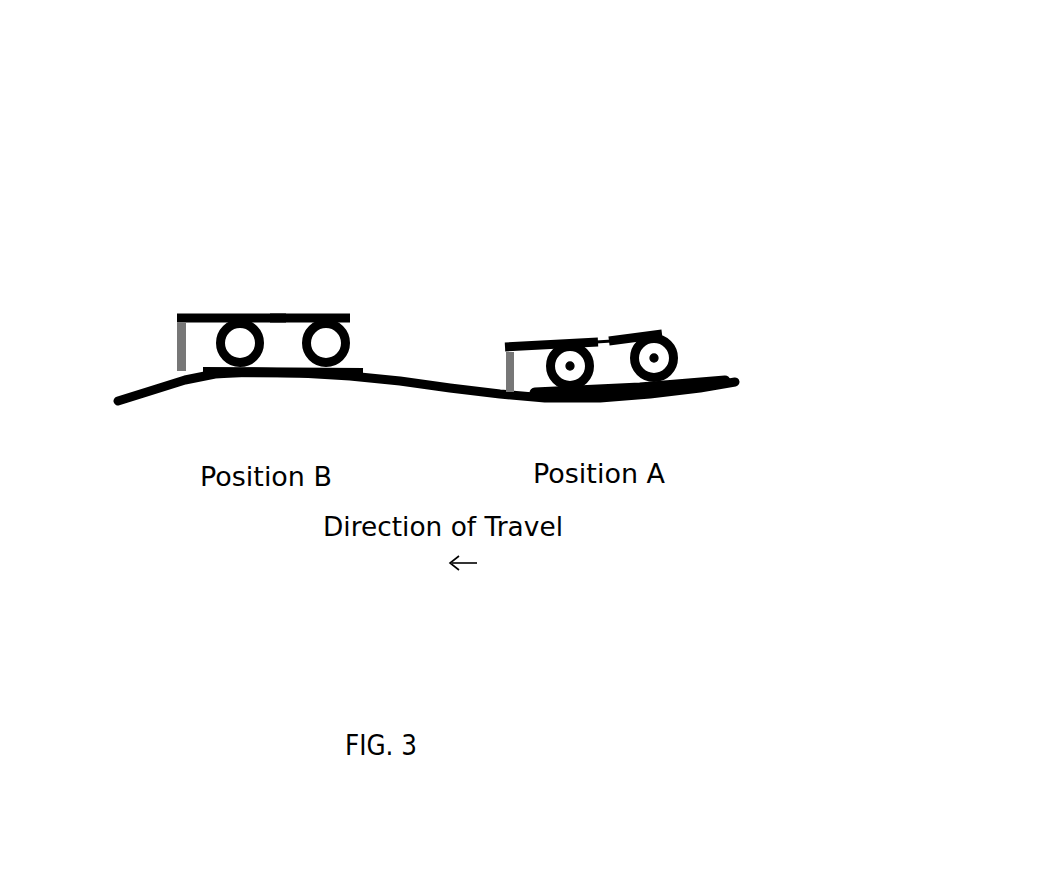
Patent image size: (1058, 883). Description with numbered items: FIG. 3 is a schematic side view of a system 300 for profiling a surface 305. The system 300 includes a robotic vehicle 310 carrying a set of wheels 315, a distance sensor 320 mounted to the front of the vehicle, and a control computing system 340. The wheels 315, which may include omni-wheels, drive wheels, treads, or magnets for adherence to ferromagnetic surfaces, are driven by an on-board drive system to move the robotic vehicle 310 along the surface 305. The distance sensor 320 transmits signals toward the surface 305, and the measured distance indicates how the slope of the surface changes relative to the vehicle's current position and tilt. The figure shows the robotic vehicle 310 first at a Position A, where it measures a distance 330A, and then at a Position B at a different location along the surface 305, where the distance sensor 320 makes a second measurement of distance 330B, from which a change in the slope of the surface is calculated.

The system 300 is at (98, 116).
The surface 305 is at (723, 390).
The robotic vehicle 310 is at (307, 315).
The set of wheels 315 is at (593, 365).
The distance sensor 320 is at (177, 323).
The distance 330A is at (505, 372).
The distance 330B is at (180, 357).
The control computing system 340 is at (278, 315).